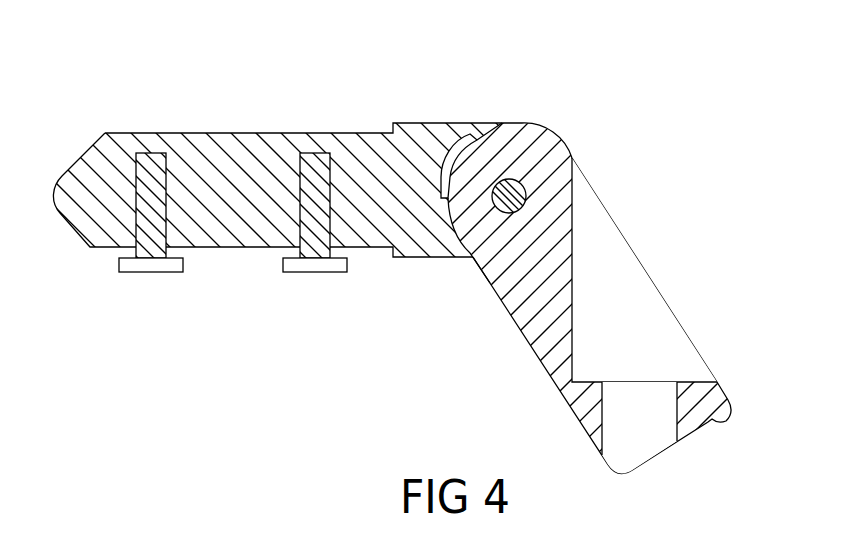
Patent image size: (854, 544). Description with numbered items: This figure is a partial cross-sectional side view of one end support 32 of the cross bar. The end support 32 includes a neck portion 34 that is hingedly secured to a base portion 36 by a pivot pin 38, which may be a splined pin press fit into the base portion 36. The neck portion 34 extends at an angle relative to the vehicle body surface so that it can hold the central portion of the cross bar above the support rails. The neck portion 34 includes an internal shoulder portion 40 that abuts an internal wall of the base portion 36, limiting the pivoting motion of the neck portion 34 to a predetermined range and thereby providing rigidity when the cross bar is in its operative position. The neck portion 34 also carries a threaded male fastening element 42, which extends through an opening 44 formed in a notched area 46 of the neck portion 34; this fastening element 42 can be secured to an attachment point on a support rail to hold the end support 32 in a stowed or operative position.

The end support 32 is at (427, 253).
The neck portion 34 is at (470, 300).
The base portion 36 is at (222, 157).
The pivot pin 38 is at (498, 213).
The internal shoulder portion 40 is at (478, 128).
The threaded male fastening element 42 is at (438, 185).
The opening 44 is at (682, 412).
The notched area 46 is at (608, 275).